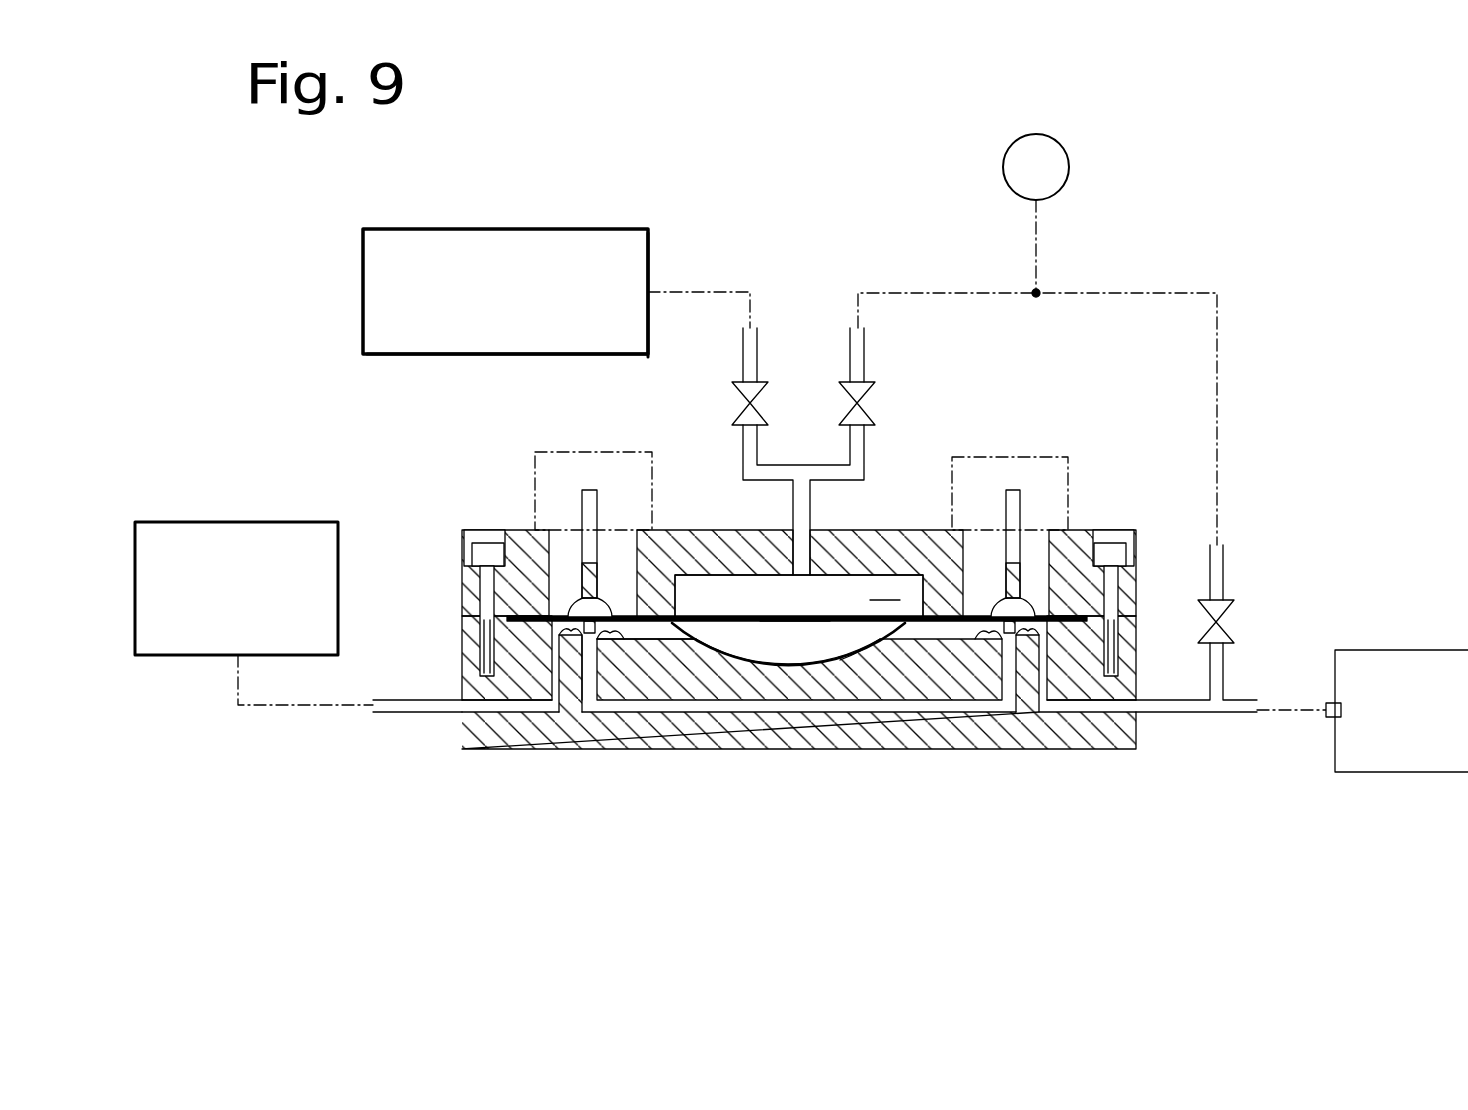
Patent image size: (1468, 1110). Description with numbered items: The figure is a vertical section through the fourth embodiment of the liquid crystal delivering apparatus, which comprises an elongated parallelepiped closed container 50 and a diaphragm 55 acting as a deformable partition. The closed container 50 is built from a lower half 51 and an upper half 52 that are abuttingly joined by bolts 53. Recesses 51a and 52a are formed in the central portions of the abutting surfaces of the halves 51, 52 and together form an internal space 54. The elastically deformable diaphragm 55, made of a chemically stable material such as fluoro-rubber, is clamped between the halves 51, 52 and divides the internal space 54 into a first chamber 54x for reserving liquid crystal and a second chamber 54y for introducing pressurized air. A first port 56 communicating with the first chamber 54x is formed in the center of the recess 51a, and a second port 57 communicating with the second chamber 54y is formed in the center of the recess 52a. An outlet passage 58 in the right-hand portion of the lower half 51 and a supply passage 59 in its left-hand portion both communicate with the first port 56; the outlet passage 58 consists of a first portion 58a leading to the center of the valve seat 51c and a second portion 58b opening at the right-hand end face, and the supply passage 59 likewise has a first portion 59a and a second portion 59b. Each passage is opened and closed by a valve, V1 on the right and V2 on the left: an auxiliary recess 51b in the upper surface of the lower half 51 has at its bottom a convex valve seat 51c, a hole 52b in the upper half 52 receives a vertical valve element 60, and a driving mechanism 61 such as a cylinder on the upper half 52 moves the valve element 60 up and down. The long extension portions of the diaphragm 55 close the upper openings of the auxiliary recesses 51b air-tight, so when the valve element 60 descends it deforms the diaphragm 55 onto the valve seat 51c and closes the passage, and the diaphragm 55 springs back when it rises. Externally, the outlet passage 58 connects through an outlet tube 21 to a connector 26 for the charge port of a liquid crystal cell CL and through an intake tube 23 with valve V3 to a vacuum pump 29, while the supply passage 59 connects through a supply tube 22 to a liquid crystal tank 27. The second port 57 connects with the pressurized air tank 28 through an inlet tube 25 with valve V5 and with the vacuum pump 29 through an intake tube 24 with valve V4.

The outlet tube 21 is at (1240, 700).
The supply tube 22 is at (428, 712).
The intake tube 23 is at (1226, 572).
The intake tube 24 is at (866, 348).
The inlet tube 25 is at (742, 358).
The connector 26 is at (1328, 717).
The liquid crystal tank 27 is at (262, 522).
The pressurized air tank 28 is at (648, 262).
The vacuum pump 29 is at (1069, 163).
The closed container 50 is at (1147, 612).
The lower half 51 is at (958, 622).
The recess 51a is at (770, 640).
The auxiliary recess 51b is at (562, 640).
The valve seat 51c is at (614, 616).
The upper half 52 is at (693, 530).
The recess 52a is at (736, 576).
The hole 52b is at (537, 530).
The bolts 53 is at (477, 530).
The internal space 54 is at (850, 650).
The first chamber 54x is at (865, 650).
The second chamber 54y is at (882, 597).
The diaphragm 55 is at (722, 640).
The first port 56 is at (794, 700).
The second port 57 is at (800, 530).
The outlet passage 58 is at (1004, 718).
The first portion 58a is at (838, 640).
The second portion 58b is at (1100, 712).
The supply passage 59 is at (600, 718).
The first portion 59a is at (645, 712).
The second portion 59b is at (487, 712).
The valve element 60 is at (594, 488).
The driving mechanism 61 is at (570, 450).
The valve V1 is at (1073, 457).
The valve V2 is at (541, 447).
The valve V3 is at (1231, 609).
The valve V4 is at (870, 400).
The valve V5 is at (762, 408).
The liquid crystal cell CL is at (1392, 772).